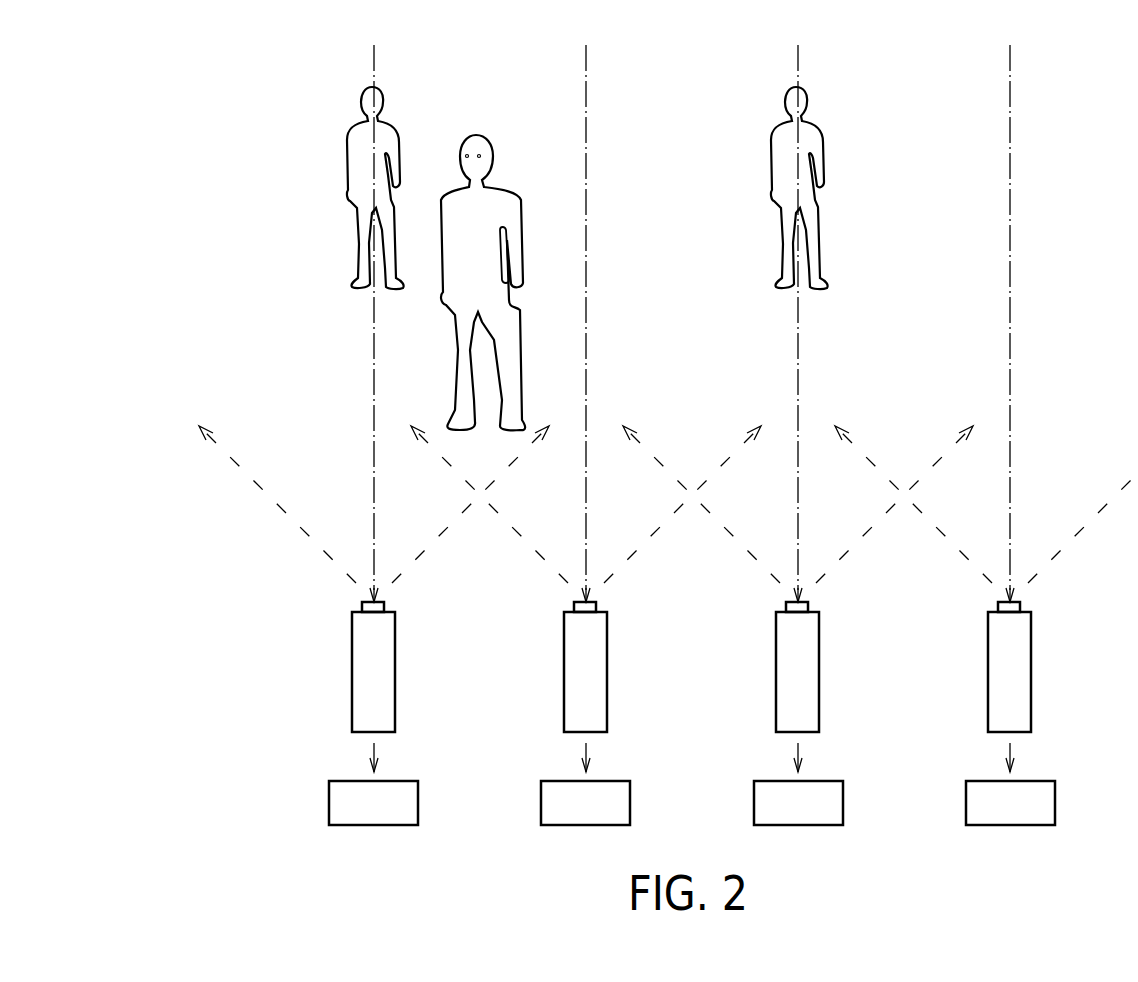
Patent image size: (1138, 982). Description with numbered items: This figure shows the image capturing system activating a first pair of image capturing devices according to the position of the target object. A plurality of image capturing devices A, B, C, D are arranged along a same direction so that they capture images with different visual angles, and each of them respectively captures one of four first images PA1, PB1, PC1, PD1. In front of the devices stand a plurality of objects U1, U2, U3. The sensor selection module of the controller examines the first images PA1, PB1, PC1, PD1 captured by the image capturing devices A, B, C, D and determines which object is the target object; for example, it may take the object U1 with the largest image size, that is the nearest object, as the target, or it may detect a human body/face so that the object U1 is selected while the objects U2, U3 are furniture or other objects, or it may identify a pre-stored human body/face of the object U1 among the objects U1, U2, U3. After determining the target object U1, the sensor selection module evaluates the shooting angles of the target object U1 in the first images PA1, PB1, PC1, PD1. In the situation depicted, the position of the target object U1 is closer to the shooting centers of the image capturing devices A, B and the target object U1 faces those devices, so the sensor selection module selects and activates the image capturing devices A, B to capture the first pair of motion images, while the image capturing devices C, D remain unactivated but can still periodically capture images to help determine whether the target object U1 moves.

The image capturing device A is at (373, 667).
The image capturing device B is at (585, 667).
The image capturing device C is at (797, 667).
The image capturing device D is at (1009, 667).
The first image PA1 is at (373, 803).
The first image PB1 is at (585, 803).
The first image PC1 is at (798, 803).
The first image PD1 is at (1010, 803).
The object U1 is at (447, 353).
The object U2 is at (383, 161).
The object U3 is at (805, 161).